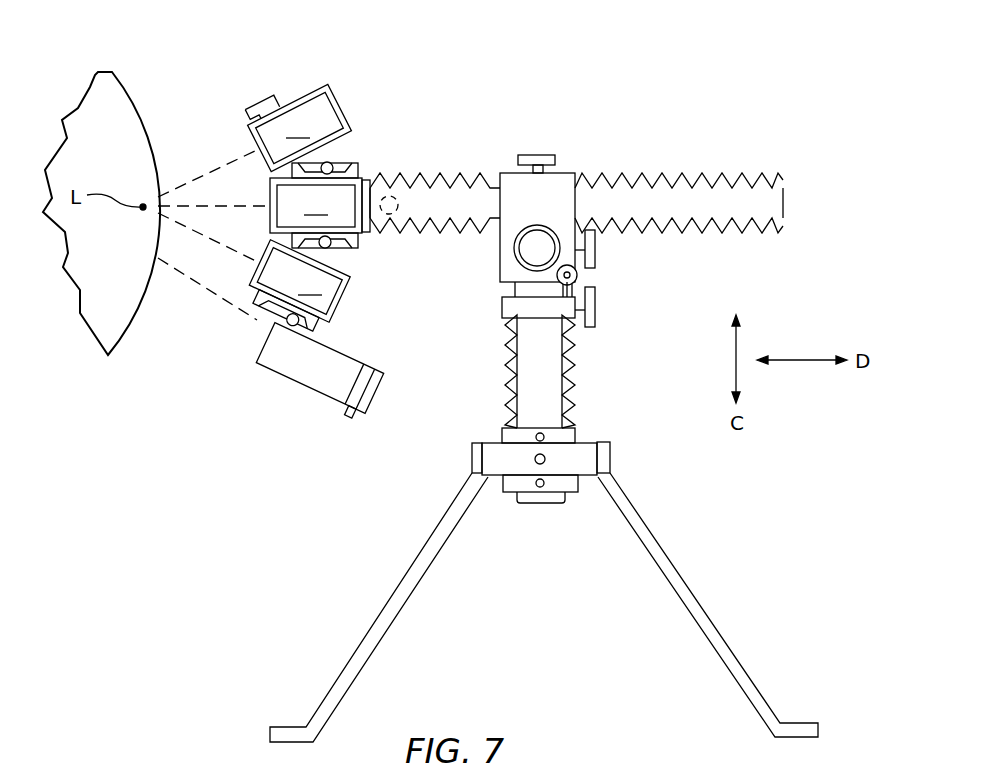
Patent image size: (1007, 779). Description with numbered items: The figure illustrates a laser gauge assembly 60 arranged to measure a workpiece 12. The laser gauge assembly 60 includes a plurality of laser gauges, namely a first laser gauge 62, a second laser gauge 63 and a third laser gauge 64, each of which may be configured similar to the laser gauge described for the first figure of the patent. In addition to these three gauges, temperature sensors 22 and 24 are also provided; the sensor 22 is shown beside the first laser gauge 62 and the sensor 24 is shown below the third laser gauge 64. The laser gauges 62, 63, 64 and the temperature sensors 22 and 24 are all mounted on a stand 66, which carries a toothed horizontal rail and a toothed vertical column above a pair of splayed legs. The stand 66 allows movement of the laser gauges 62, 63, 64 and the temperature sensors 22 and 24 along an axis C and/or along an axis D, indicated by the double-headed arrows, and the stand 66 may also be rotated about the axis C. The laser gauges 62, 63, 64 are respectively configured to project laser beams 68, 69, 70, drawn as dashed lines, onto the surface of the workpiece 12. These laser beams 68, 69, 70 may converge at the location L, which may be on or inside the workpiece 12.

The workpiece 12 is at (117, 327).
The temperature sensor 22 is at (285, 80).
The temperature sensor 24 is at (315, 393).
The laser gauge assembly 60 is at (544, 388).
The first laser gauge 62 is at (300, 127).
The second laser gauge 63 is at (320, 205).
The third laser gauge 64 is at (295, 290).
The stand 66 is at (555, 187).
The laser beam 68 is at (197, 177).
The laser beam 69 is at (243, 203).
The laser beam 70 is at (223, 247).